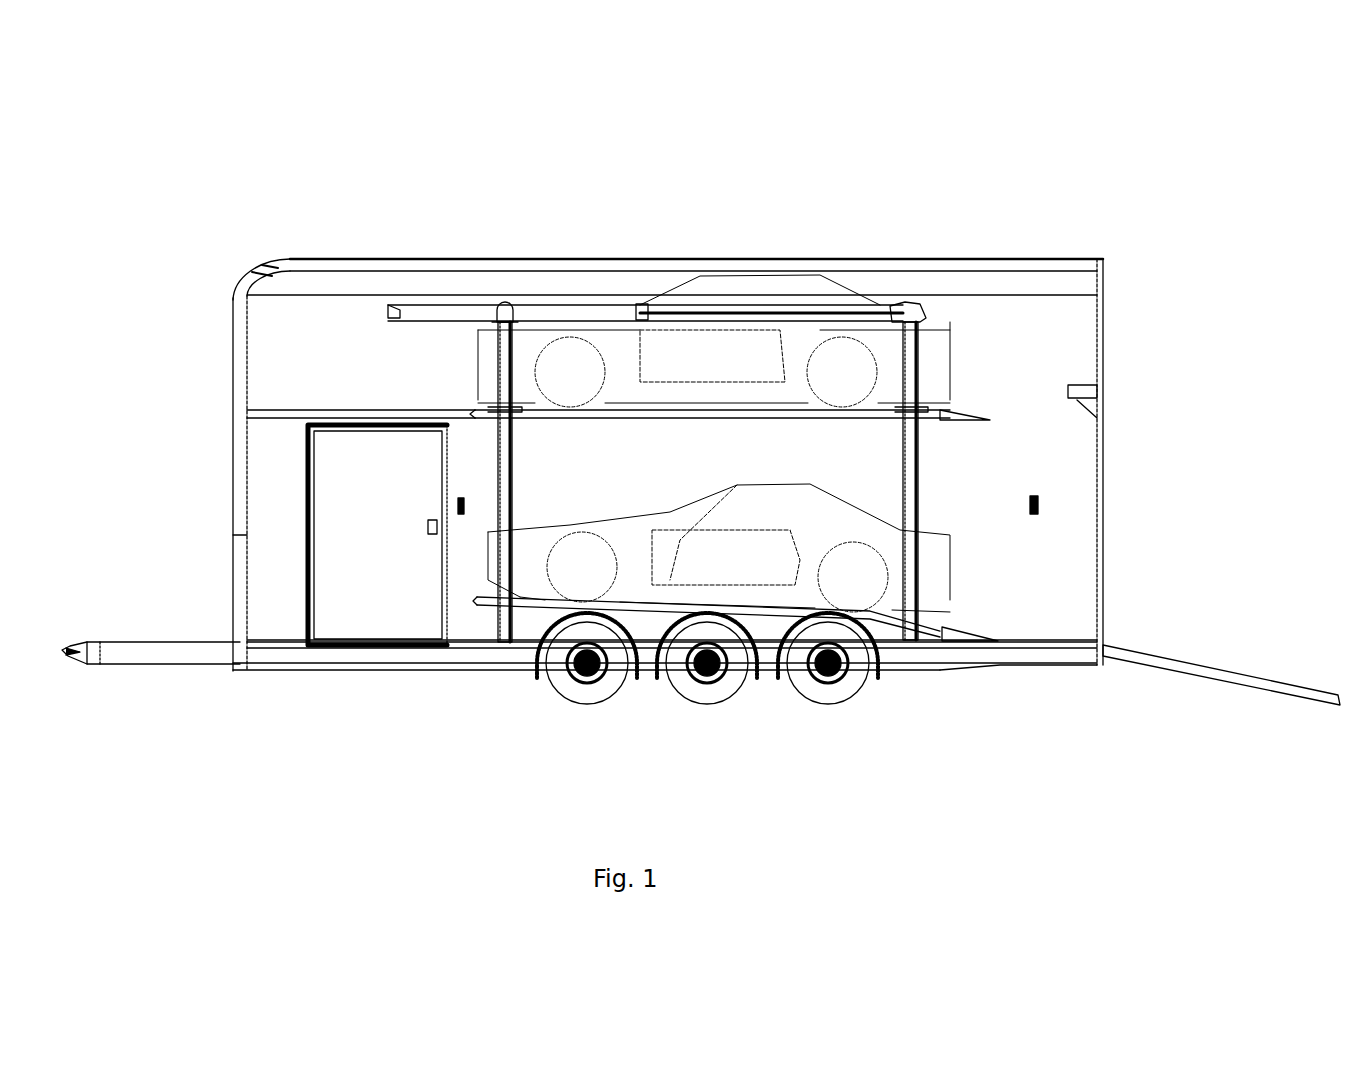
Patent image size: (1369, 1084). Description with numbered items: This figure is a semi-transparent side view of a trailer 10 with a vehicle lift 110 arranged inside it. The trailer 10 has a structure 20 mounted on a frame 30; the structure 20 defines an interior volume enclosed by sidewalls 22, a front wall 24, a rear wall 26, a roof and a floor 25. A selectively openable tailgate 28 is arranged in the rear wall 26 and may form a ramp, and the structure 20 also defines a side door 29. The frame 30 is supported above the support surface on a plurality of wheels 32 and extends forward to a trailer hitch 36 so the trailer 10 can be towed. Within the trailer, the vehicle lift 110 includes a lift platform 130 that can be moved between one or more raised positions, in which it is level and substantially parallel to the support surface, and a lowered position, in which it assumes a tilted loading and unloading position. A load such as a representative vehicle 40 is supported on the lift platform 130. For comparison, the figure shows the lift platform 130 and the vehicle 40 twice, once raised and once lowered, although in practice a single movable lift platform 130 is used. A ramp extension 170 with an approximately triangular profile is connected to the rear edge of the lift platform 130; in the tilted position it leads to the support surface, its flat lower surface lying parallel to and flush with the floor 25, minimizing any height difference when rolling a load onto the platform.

The trailer 10 is at (382, 178).
The structure 20 is at (557, 259).
The sidewalls 22 is at (358, 371).
The front wall 24 is at (245, 490).
The floor 25 is at (1012, 640).
The rear wall 26 is at (1102, 336).
The tailgate 28 is at (1147, 652).
The side door 29 is at (375, 580).
The frame 30 is at (160, 655).
The wheels 32 is at (586, 690).
The trailer hitch 36 is at (73, 648).
The vehicle 40 is at (930, 352).
The vehicle lift 110 is at (963, 468).
The lift platform 130 is at (700, 420).
The ramp extension 170 is at (950, 634).